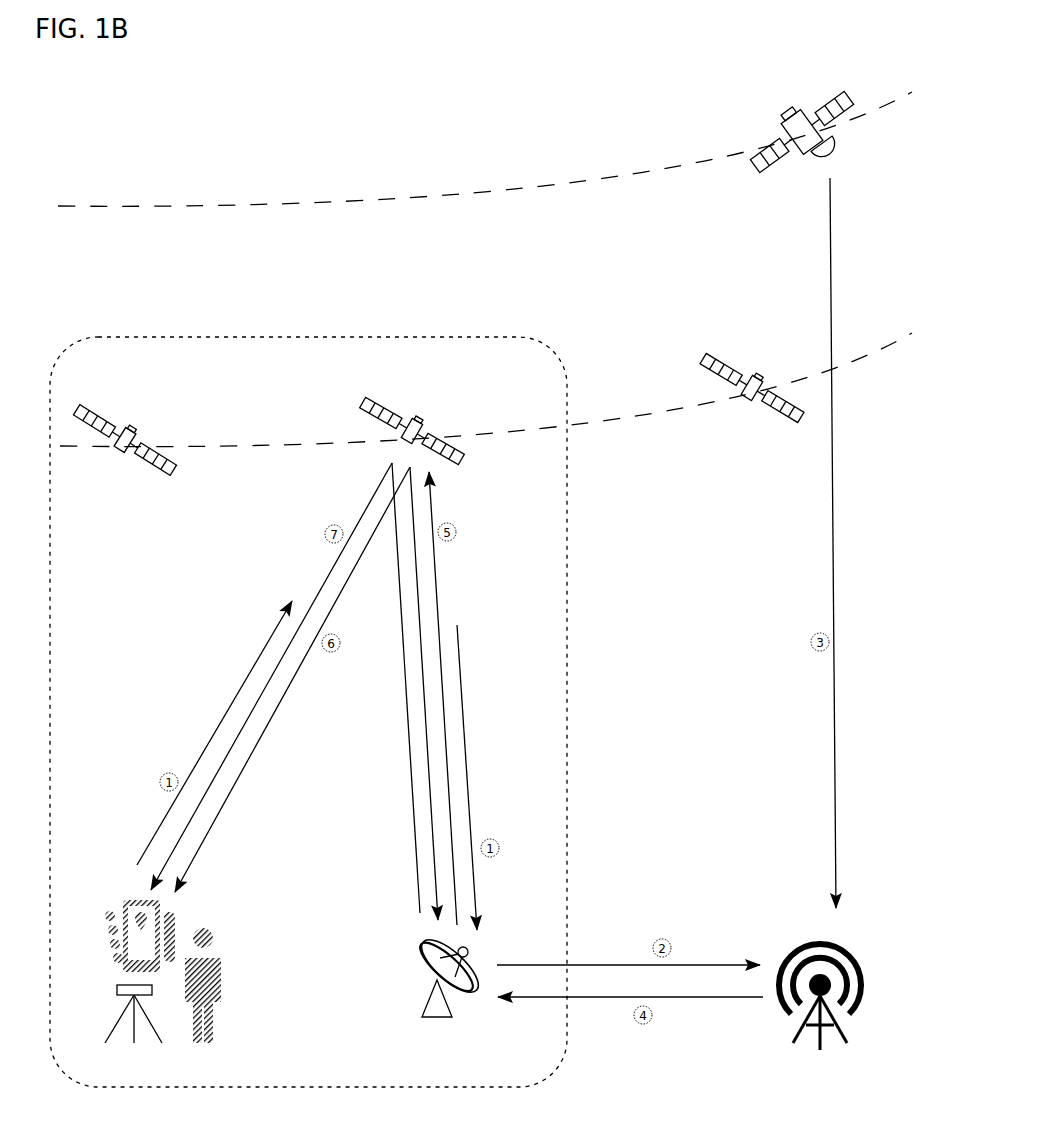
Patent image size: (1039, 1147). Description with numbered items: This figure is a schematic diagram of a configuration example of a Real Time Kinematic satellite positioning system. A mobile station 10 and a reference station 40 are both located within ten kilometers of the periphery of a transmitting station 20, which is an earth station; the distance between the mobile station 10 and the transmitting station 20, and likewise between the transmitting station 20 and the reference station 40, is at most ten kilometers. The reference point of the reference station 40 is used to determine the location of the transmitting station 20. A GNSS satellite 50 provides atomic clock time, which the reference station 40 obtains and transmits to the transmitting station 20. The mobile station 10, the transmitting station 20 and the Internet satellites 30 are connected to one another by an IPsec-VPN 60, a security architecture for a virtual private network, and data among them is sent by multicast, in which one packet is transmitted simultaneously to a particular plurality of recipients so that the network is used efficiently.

The mobile station 10 is at (187, 910).
The transmitting station 20 is at (472, 952).
The Internet satellites 30 is at (423, 417).
The reference station 40 is at (857, 947).
The GNSS satellite 50 is at (770, 105).
The IPsec-VPN 60 is at (565, 597).